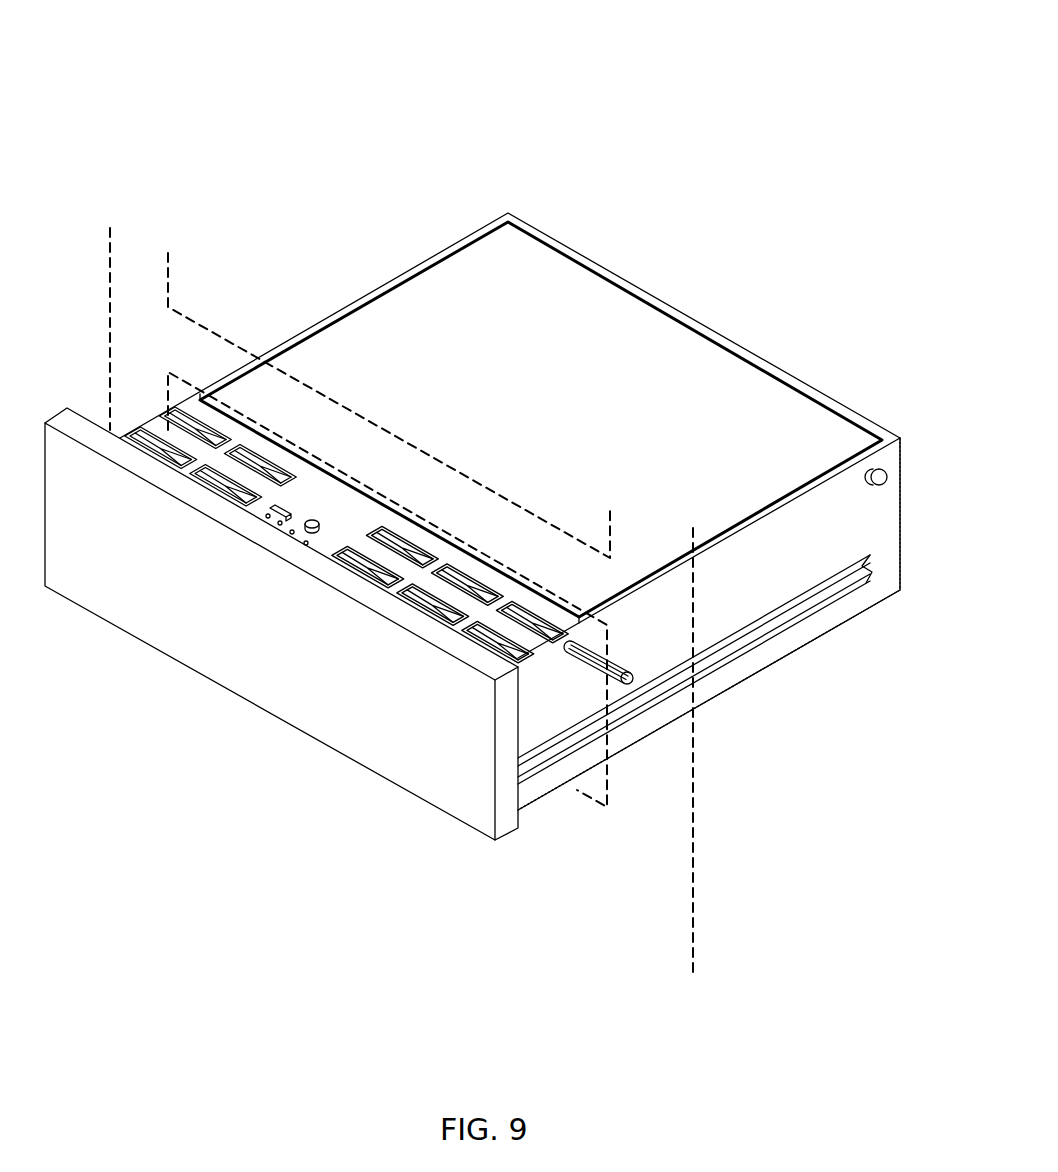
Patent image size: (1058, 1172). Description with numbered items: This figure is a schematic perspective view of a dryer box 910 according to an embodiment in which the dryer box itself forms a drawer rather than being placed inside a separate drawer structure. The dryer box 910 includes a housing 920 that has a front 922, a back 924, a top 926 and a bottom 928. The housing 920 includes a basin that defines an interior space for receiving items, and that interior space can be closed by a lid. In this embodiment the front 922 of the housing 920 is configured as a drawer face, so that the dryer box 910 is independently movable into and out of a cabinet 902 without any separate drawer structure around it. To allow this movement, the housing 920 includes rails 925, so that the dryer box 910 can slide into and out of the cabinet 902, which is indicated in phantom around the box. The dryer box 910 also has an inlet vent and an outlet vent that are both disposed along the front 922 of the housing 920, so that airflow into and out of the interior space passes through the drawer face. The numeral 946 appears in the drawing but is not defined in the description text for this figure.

The dryer box 910 is at (502, 425).
The housing 920 is at (502, 526).
The front 922 is at (128, 386).
The back 924 is at (541, 328).
The rails 925 is at (757, 630).
The top 926 is at (739, 624).
The bottom 928 is at (737, 669).
The top panel 946 is at (633, 362).
The cabinet 902 is at (693, 862).